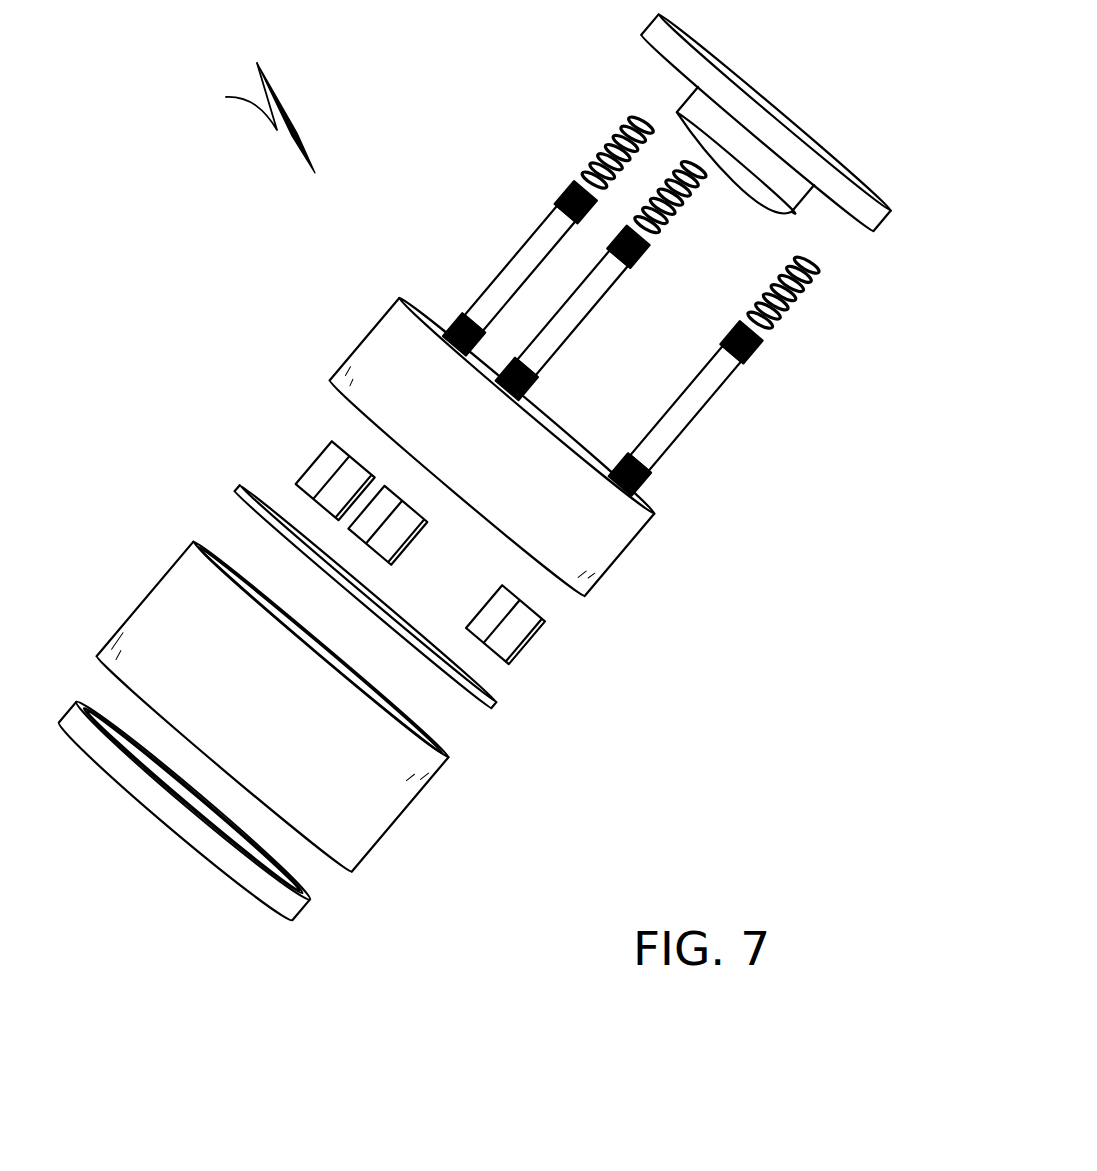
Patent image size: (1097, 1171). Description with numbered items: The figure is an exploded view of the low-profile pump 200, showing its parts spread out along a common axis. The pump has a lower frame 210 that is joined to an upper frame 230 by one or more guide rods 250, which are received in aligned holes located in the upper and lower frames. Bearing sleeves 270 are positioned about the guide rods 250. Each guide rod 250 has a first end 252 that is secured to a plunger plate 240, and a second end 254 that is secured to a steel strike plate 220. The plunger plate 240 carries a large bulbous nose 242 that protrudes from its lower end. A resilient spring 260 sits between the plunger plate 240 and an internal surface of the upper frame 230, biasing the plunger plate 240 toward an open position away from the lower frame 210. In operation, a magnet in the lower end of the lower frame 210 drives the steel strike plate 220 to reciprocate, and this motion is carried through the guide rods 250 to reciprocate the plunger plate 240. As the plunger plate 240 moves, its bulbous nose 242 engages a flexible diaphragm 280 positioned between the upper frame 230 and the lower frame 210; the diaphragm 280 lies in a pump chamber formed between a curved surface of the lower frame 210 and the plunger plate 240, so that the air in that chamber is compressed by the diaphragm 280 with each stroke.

The low-profile pump 200 is at (247, 118).
The lower frame 210 is at (423, 787).
The steel strike plate 220 is at (235, 870).
The upper frame 230 is at (627, 552).
The plunger plate 240 is at (870, 187).
The bulbous nose 242 is at (720, 188).
The guide rod 250 is at (535, 235).
The first end 252 is at (633, 263).
The second end 254 is at (648, 482).
The resilient spring 260 is at (607, 142).
The bearing sleeve 270 is at (333, 458).
The flexible diaphragm 280 is at (257, 493).